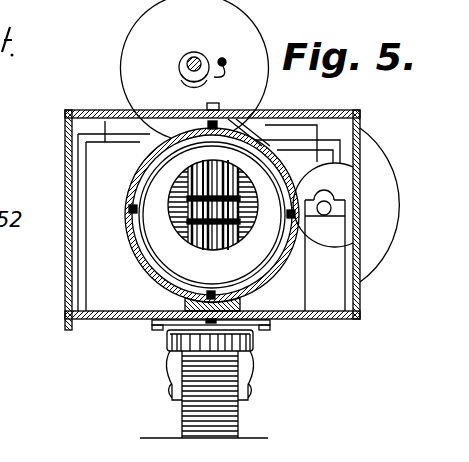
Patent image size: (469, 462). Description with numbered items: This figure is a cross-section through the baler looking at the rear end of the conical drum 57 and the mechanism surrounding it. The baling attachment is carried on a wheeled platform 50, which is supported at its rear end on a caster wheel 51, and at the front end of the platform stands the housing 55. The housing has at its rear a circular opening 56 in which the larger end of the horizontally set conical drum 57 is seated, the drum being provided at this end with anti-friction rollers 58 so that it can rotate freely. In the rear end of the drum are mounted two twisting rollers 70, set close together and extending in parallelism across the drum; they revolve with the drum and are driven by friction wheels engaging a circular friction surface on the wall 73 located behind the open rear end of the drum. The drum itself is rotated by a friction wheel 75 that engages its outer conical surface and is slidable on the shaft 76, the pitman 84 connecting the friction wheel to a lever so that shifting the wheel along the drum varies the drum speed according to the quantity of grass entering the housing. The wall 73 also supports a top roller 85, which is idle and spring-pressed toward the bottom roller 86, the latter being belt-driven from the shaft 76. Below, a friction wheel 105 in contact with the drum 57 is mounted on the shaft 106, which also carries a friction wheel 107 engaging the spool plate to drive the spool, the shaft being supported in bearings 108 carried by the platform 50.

The wheeled platform 50 is at (122, 320).
The caster wheel 51 is at (133, 230).
The housing 55 is at (66, 172).
The circular opening 56 is at (152, 278).
The conical drum 57 is at (181, 407).
The anti-friction rollers 58 is at (130, 181).
The twisting rollers 70 is at (198, 252).
The wall 73 is at (108, 128).
The friction wheel 75 is at (124, 71).
The shaft 76 is at (193, 53).
The pitman 84 is at (224, 59).
The top roller 85 is at (246, 192).
The bottom roller 86 is at (246, 223).
The friction wheel 105 is at (297, 182).
The shaft 106 is at (324, 215).
The friction wheel 107 is at (382, 254).
The bearings 108 is at (347, 280).